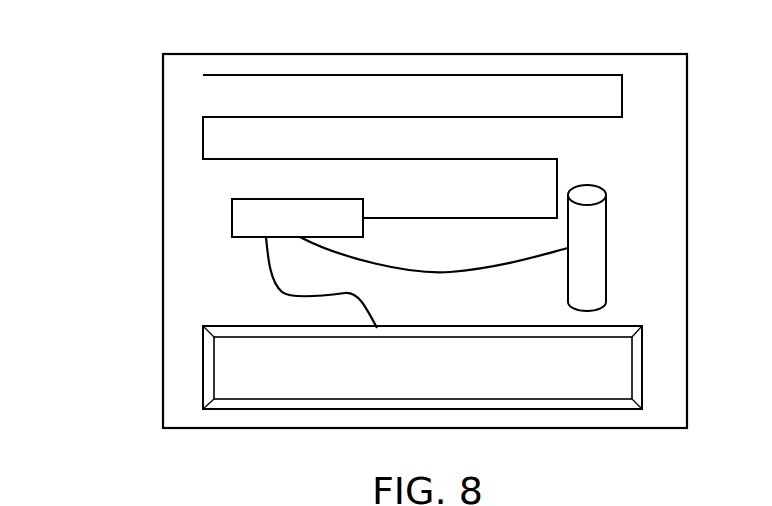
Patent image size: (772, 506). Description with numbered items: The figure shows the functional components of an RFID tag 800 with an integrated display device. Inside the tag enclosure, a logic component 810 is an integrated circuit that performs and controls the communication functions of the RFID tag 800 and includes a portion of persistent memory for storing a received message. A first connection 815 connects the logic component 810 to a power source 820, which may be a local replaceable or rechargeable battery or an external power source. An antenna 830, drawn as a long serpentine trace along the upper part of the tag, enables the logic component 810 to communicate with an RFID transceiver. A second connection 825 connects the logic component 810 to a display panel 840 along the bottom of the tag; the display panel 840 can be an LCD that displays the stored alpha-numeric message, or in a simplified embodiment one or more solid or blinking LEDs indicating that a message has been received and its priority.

The RFID tag 800 is at (128, 118).
The logic component 810 is at (319, 231).
The first connection 815 is at (454, 273).
The power source 820 is at (596, 240).
The second connection 825 is at (268, 278).
The antenna 830 is at (478, 75).
The display panel 840 is at (645, 368).